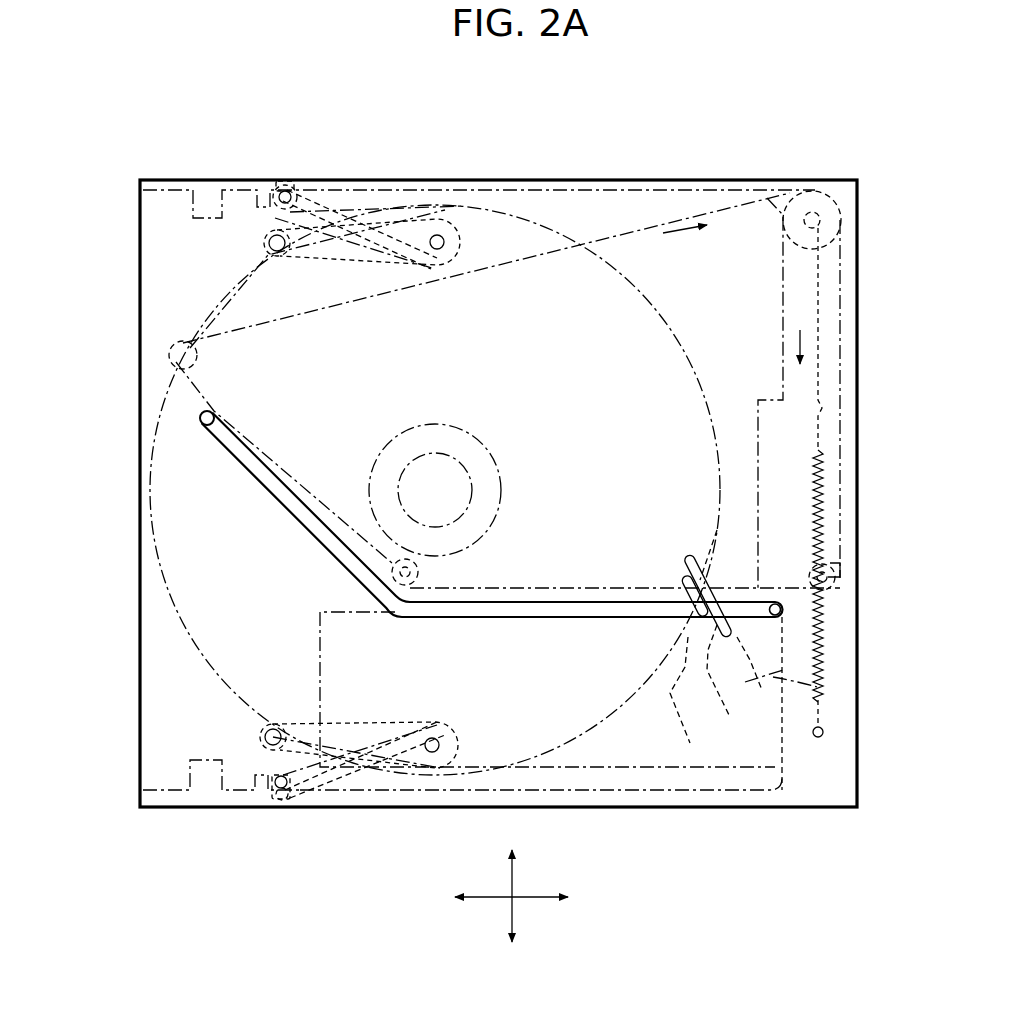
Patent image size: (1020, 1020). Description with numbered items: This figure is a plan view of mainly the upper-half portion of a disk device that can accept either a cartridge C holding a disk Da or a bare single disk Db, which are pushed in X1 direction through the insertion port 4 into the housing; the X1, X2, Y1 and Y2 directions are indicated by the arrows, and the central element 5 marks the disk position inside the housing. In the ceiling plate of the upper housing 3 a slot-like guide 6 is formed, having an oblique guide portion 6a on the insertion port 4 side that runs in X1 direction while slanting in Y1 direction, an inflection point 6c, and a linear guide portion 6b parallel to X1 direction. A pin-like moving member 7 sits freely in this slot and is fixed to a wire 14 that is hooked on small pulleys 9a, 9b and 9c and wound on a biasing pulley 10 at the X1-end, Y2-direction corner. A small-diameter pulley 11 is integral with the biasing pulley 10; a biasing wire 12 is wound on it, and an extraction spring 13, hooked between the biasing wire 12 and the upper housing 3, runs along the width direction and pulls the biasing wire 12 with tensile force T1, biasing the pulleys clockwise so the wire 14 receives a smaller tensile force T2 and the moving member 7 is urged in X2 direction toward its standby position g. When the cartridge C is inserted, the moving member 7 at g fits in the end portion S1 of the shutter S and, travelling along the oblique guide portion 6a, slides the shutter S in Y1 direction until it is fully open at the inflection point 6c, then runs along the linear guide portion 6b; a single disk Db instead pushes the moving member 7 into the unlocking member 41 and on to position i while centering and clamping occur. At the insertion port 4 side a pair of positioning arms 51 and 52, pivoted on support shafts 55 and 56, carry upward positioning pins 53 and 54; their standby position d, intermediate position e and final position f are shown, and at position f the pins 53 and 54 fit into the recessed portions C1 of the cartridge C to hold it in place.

The insertion port 4 is at (128, 560).
The disk Da is at (567, 237).
The single disk Db is at (435, 451).
The spindle motor 5 is at (490, 507).
The guide 6 is at (437, 540).
The oblique guide portion 6a is at (260, 472).
The linear guide portion 6b is at (578, 610).
The inflection point 6c is at (400, 607).
The moving member 7 is at (200, 418).
The standby position of the moving member g is at (214, 414).
The small pulley 9a is at (170, 355).
The small pulley 9b is at (423, 573).
The small pulley 9c is at (838, 583).
The wire 14 is at (330, 303).
The biasing pulley 10 is at (835, 360).
The small-diameter pulley 11 is at (845, 219).
The biasing wire 12 is at (842, 312).
The extraction spring 13 is at (827, 490).
The end portion of the shutter S1 is at (780, 638).
The unlocking member 41 is at (817, 687).
The shutter S is at (775, 767).
The upper housing 3 is at (787, 808).
The positioning pin 54 is at (283, 183).
The recessed portion C1 is at (262, 200).
The positioning arm 52 is at (318, 188).
The support shaft 56 is at (440, 235).
The pivotal position of the positioning arms f is at (270, 240).
The pivotal position of the positioning arms e is at (320, 253).
The pivotal position of the positioning arms d is at (383, 187).
The tensile force T2 is at (686, 245).
The tensile force T1 is at (801, 362).
The positioning pin 53 is at (278, 788).
The positioning arm 51 is at (323, 793).
The support shaft 55 is at (440, 740).
The cartridge C is at (177, 800).
The position of the moving member i is at (685, 657).
The insertion direction X1 is at (557, 898).
The direction opposite to insertion X2 is at (465, 898).
The width direction Y1 is at (512, 933).
The width direction Y2 is at (511, 859).